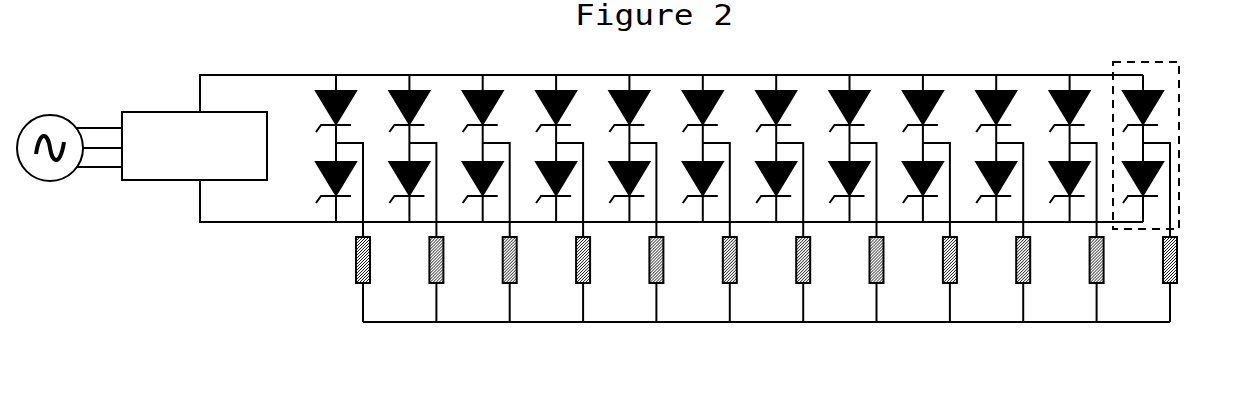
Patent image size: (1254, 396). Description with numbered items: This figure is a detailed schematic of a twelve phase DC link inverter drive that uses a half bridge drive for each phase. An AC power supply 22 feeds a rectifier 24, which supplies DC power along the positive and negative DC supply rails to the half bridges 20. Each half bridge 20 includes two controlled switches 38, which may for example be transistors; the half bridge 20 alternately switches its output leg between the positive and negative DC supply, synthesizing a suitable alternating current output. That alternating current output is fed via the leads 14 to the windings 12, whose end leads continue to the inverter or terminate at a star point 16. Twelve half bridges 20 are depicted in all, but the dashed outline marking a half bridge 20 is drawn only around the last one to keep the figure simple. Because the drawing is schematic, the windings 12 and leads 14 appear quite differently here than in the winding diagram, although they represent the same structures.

The coil 12 is at (356, 260).
The lead 14 is at (362, 207).
The star point 16 is at (703, 324).
The half bridge 20 is at (1128, 62).
The AC power supply 22 is at (50, 114).
The rectifier 24 is at (140, 112).
The controlled switch 38 is at (1172, 162).